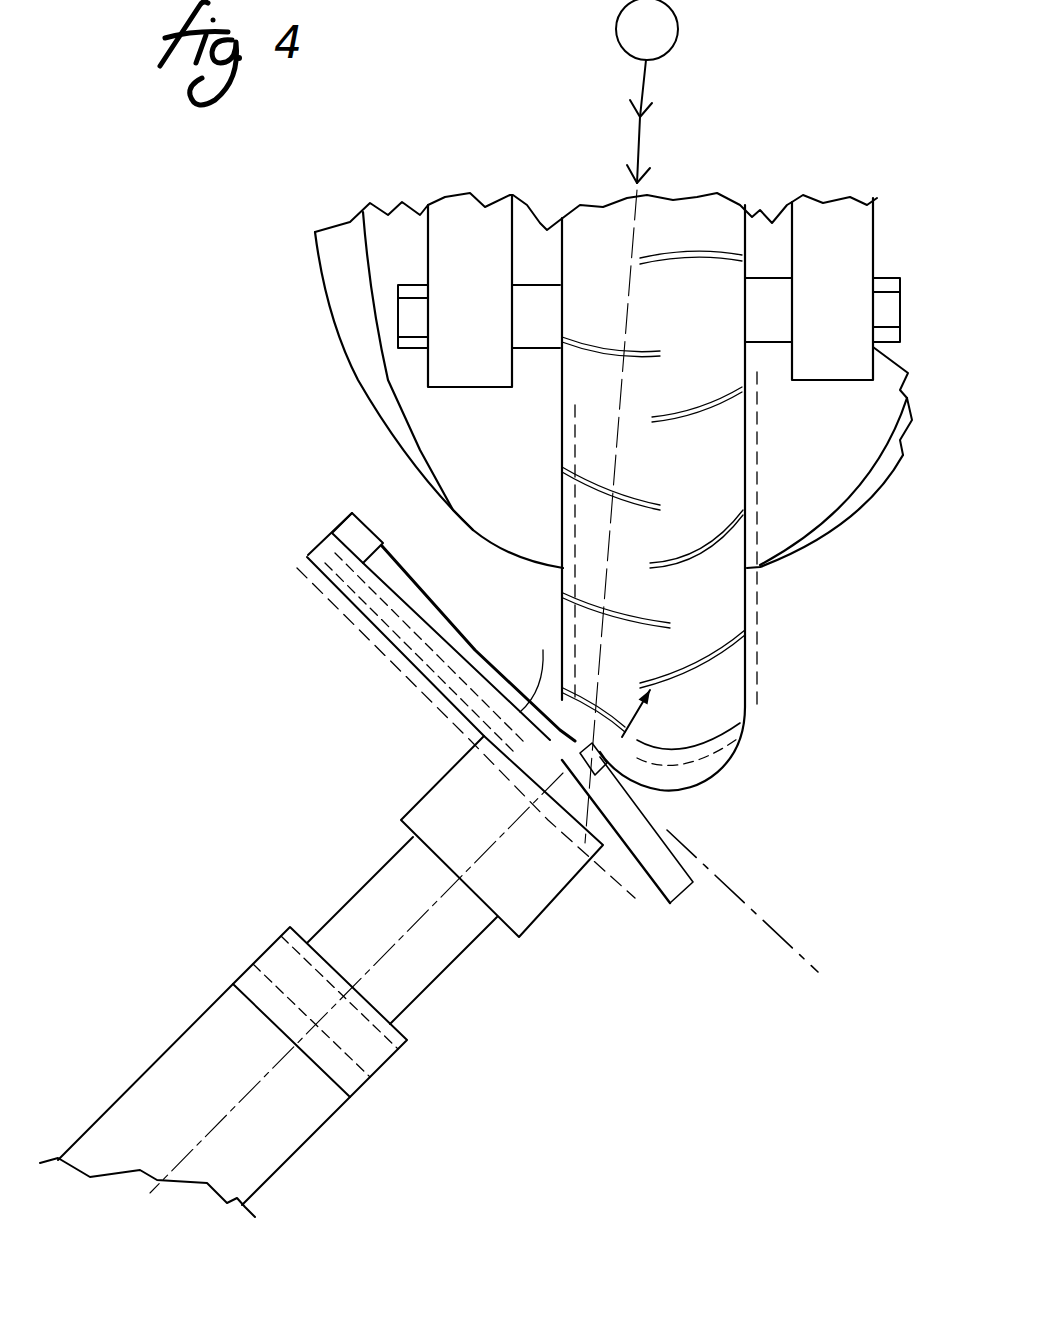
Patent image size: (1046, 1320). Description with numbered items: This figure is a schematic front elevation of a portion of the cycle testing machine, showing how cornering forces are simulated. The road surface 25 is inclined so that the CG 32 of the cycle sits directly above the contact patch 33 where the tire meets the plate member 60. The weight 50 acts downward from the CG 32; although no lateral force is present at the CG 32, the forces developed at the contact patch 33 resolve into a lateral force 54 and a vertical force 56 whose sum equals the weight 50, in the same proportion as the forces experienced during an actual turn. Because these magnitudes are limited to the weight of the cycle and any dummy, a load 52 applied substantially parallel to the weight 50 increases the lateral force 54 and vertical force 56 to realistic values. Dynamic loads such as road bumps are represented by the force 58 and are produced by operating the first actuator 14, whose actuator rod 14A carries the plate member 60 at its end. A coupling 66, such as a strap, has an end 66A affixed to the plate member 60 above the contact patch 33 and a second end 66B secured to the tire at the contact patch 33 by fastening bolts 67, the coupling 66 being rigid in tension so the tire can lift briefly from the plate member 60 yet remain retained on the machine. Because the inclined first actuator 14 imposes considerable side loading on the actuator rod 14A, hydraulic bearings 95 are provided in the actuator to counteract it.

The CG 32 is at (675, 15).
The load 52 is at (647, 78).
The weight 50 is at (643, 132).
The contact patch 33 is at (650, 783).
The coupling 66 is at (397, 527).
The end 66A is at (325, 527).
The second end 66B is at (625, 795).
The plate member 60 is at (693, 885).
The fastening bolts or screws 67 is at (590, 748).
The lateral force 54 is at (520, 712).
The vertical force 56 is at (656, 695).
The force 58 is at (705, 740).
The road surface 25 is at (733, 888).
The actuator rod 14A is at (455, 953).
The hydraulic bearings 95 is at (253, 987).
The first actuator 14 is at (350, 1101).